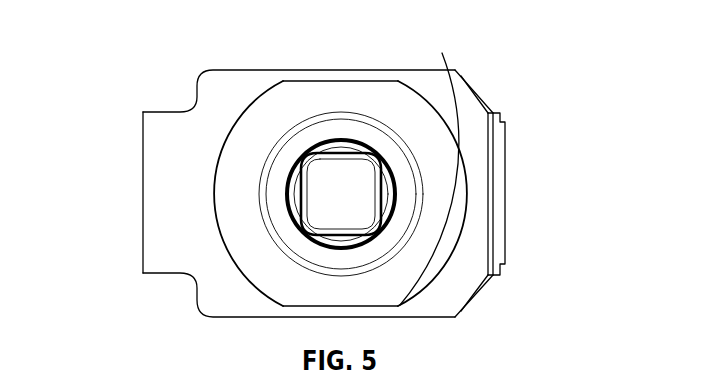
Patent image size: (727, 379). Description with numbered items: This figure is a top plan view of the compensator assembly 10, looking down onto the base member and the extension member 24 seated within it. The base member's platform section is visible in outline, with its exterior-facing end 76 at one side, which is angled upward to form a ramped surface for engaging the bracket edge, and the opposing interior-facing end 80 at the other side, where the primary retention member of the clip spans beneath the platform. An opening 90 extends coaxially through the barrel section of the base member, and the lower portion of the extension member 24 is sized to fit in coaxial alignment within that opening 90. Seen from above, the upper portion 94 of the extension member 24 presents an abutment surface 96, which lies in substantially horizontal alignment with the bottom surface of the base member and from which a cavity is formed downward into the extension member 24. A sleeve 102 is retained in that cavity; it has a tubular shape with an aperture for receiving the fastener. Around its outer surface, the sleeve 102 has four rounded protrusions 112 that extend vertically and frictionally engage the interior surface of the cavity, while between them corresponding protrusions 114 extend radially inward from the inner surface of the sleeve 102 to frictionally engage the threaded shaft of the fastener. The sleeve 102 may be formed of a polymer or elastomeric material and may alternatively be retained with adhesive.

The compensator assembly 10 is at (131, 81).
The interior-facing end 80 is at (134, 191).
The extension member 24 is at (446, 176).
The exterior-facing end 76 is at (508, 172).
The upper portion 94 is at (450, 265).
The abutment surface 96 is at (412, 267).
The sleeve 102 is at (302, 150).
The opening 90 is at (342, 183).
The rounded protrusions 112 is at (340, 150).
The protrusions 114 is at (318, 215).